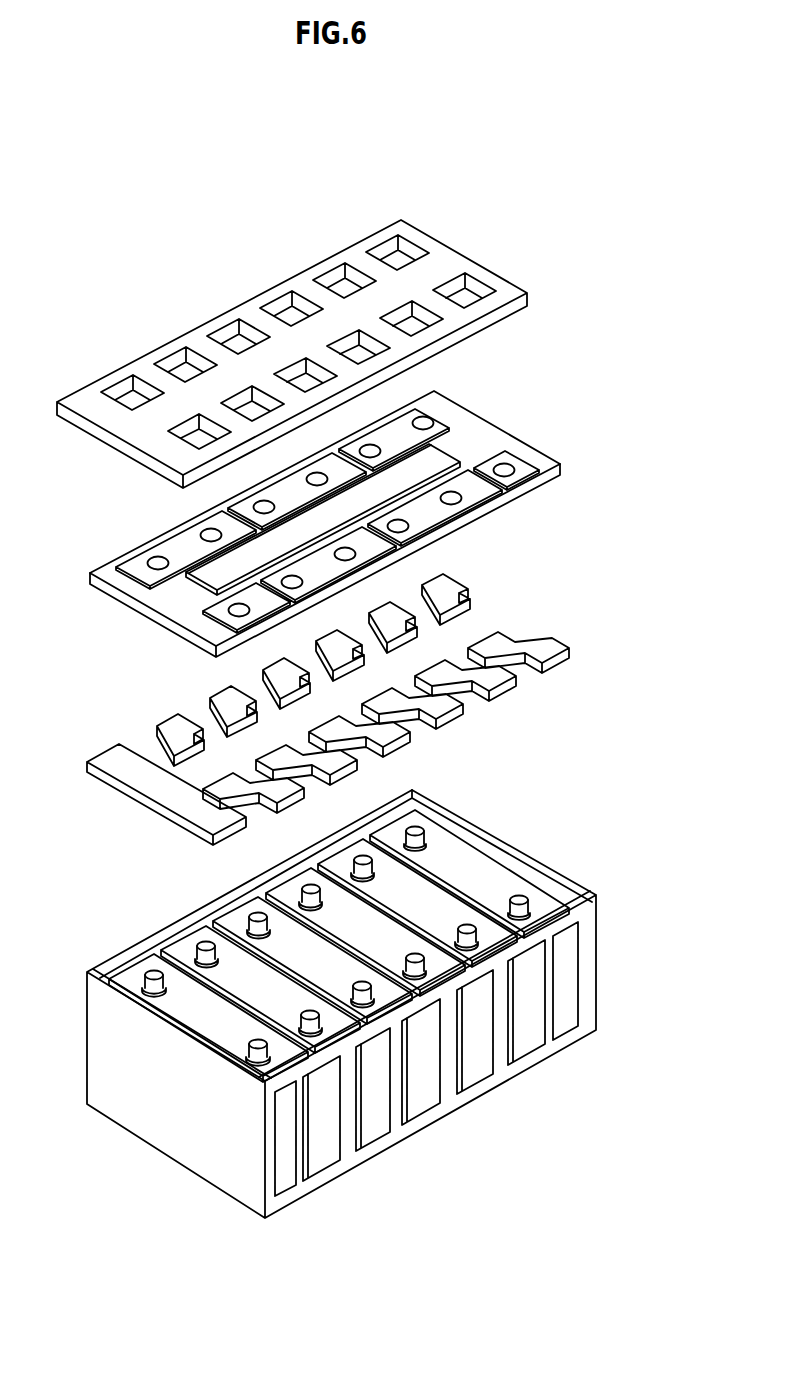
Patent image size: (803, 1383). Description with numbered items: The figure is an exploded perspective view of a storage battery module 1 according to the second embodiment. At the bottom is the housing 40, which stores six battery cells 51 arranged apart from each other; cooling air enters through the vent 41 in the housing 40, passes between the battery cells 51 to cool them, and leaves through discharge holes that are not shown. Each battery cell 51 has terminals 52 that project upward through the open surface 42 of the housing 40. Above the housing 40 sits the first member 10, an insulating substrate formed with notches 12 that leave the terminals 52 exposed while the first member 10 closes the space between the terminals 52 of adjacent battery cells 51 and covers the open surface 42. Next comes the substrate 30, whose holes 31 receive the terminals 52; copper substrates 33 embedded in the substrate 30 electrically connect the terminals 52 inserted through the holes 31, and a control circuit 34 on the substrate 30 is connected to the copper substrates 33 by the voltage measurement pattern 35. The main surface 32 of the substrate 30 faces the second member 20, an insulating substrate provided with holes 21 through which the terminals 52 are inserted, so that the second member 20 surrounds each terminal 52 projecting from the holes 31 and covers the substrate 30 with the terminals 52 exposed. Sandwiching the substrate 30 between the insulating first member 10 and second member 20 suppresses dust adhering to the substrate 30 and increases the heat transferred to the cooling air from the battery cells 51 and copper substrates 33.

The storage battery module 1 is at (277, 256).
The first member 10 is at (349, 709).
The notches 12 is at (520, 674).
The second member 20 is at (318, 337).
The holes 21 is at (404, 258).
The substrate 30 is at (322, 506).
The holes 31 is at (413, 428).
The main surface 32 is at (476, 428).
The copper substrates 33 is at (133, 565).
The control circuit 34 is at (207, 573).
The voltage measurement pattern 35 is at (192, 567).
The housing 40 is at (370, 990).
The vent 41 is at (576, 978).
The open surface 42 is at (522, 860).
The battery cells 51 is at (450, 850).
The terminals 52 is at (419, 822).